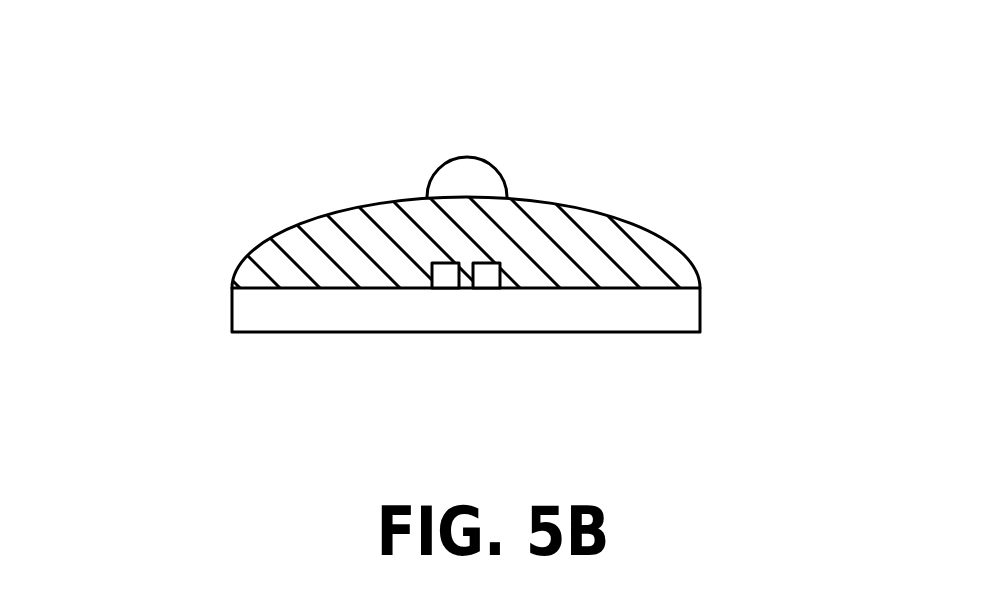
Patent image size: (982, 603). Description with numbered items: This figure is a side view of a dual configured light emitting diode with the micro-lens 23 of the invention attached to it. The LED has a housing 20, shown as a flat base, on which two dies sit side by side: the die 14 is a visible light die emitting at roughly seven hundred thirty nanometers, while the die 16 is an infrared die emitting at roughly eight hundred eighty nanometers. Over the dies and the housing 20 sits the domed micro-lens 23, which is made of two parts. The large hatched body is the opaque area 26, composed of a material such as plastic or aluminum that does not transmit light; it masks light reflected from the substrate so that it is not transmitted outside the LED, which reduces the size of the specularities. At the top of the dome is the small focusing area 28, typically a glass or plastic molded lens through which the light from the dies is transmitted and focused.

The die 14 is at (482, 283).
The die 16 is at (437, 287).
The housing 20 is at (702, 332).
The micro-lens 23 is at (497, 140).
The opaque area 26 is at (293, 238).
The focusing area 28 is at (452, 177).